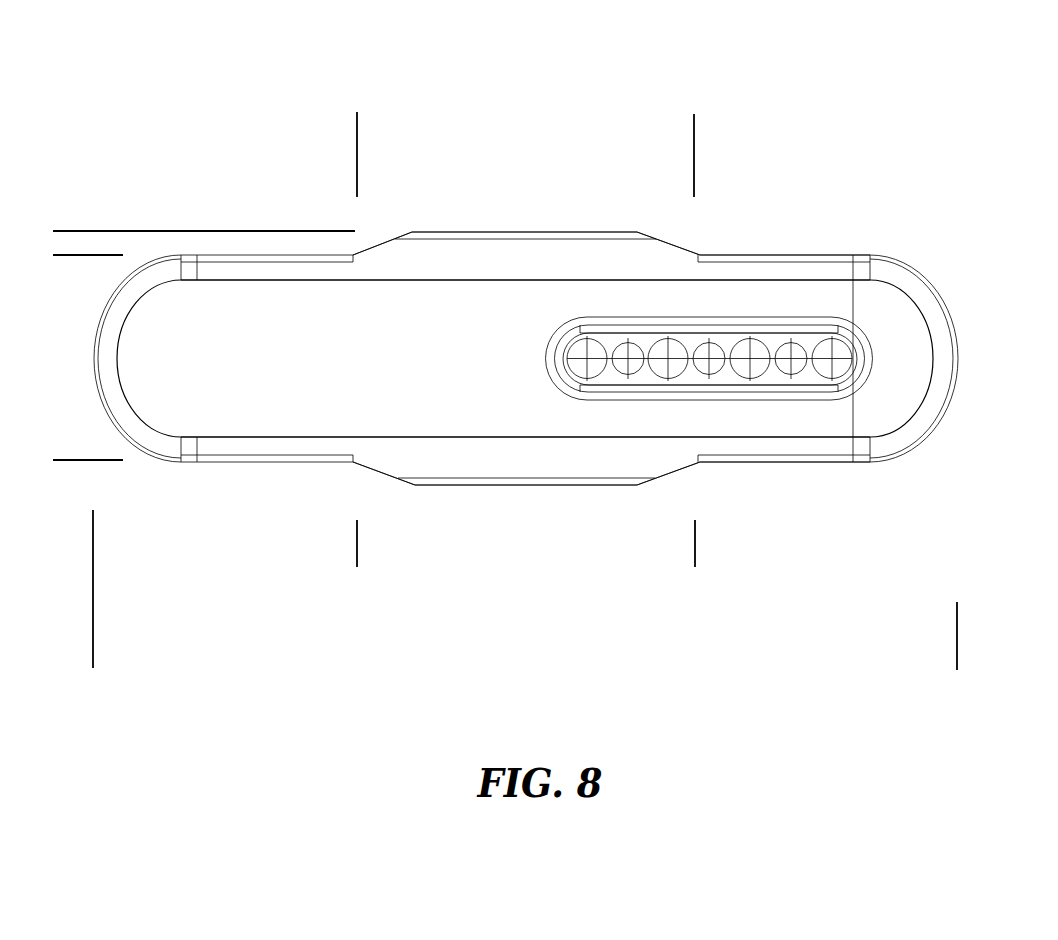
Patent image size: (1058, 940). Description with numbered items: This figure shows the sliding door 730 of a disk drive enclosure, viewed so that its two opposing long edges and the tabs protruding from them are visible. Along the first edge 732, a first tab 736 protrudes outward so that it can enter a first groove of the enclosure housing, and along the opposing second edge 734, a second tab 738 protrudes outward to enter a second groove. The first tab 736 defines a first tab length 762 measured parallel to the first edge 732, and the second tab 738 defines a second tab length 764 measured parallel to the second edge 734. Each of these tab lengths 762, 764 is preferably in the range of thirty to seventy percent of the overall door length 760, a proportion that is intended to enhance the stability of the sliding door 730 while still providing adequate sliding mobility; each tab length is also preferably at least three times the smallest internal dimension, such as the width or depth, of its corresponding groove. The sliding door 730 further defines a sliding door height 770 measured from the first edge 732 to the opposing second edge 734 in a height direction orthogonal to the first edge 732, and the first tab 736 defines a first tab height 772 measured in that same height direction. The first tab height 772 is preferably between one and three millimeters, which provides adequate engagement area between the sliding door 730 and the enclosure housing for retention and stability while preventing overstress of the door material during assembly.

The sliding door 730 is at (526, 242).
The first edge 732 is at (808, 255).
The second edge 734 is at (808, 463).
The first tab 736 is at (645, 233).
The second tab 738 is at (640, 484).
The door length 760 is at (525, 590).
The first tab length 762 is at (525, 154).
The second tab length 764 is at (526, 543).
The sliding door height 770 is at (82, 357).
The first tab height 772 is at (199, 194).